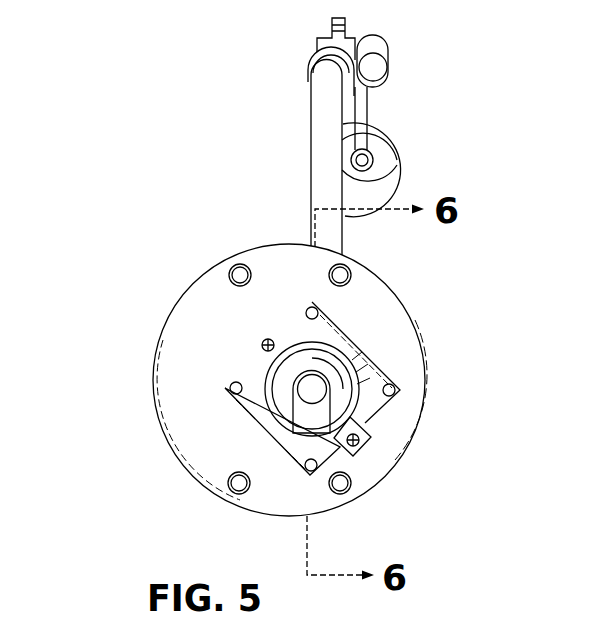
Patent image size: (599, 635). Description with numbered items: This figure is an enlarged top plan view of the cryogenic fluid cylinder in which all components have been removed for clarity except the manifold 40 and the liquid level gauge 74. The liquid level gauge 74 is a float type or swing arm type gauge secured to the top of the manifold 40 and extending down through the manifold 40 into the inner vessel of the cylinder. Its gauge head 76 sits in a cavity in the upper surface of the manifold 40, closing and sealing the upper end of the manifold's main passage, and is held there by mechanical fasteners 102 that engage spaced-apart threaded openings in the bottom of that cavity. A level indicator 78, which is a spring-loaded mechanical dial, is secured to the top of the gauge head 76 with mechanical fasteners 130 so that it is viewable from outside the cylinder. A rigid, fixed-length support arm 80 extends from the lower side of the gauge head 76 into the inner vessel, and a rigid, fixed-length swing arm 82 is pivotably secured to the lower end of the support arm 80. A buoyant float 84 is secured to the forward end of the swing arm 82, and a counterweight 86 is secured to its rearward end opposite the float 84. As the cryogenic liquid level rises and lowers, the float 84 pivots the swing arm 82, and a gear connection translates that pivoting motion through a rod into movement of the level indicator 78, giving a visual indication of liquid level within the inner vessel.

The liquid level gauge 74 is at (496, 253).
The manifold 40 is at (417, 327).
The mechanical fasteners 102 is at (236, 382).
The gauge head 76 is at (383, 414).
The level indicator 78 is at (372, 437).
The mechanical fasteners 130 is at (264, 343).
The support arm 80 is at (310, 148).
The swing arm 82 is at (368, 100).
The float 84 is at (398, 162).
The counterweight 86 is at (388, 55).